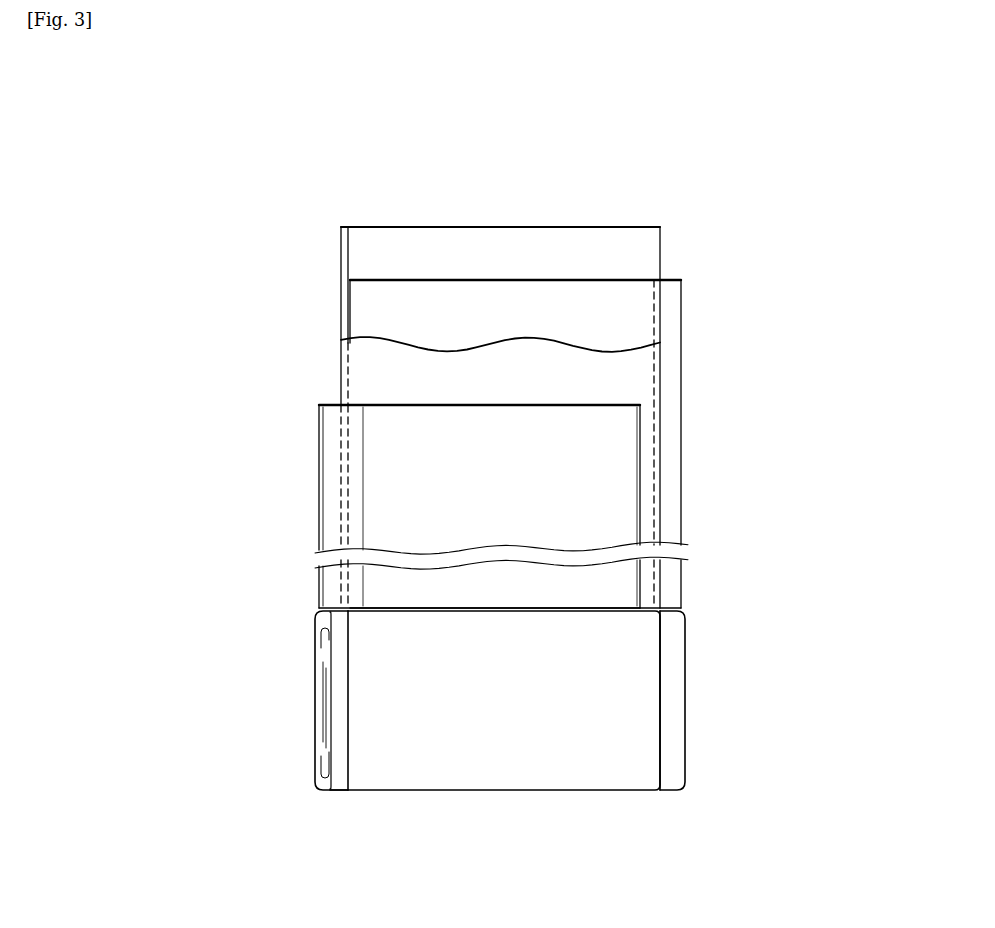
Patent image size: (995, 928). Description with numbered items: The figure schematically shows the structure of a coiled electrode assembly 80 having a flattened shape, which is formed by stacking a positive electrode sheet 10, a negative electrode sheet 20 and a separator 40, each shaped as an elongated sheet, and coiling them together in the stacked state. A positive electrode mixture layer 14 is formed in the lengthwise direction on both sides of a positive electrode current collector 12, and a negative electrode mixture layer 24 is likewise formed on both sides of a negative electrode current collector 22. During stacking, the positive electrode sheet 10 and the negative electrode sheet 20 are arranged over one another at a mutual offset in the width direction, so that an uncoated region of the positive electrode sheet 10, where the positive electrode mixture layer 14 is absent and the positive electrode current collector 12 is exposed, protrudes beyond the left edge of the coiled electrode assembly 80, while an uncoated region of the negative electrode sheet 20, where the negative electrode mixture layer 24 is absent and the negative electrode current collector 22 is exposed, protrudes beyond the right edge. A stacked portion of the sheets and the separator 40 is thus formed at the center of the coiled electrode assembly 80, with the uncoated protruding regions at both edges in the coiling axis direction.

The positive electrode sheet 10 is at (430, 506).
The positive electrode current collector 12 is at (316, 538).
The positive electrode mixture layer 14 is at (377, 424).
The negative electrode sheet 20 is at (557, 439).
The negative electrode current collector 22 is at (683, 450).
The negative electrode mixture layer 24 is at (645, 305).
The separator 40 is at (360, 245).
The coiled electrode assembly 80 is at (561, 770).